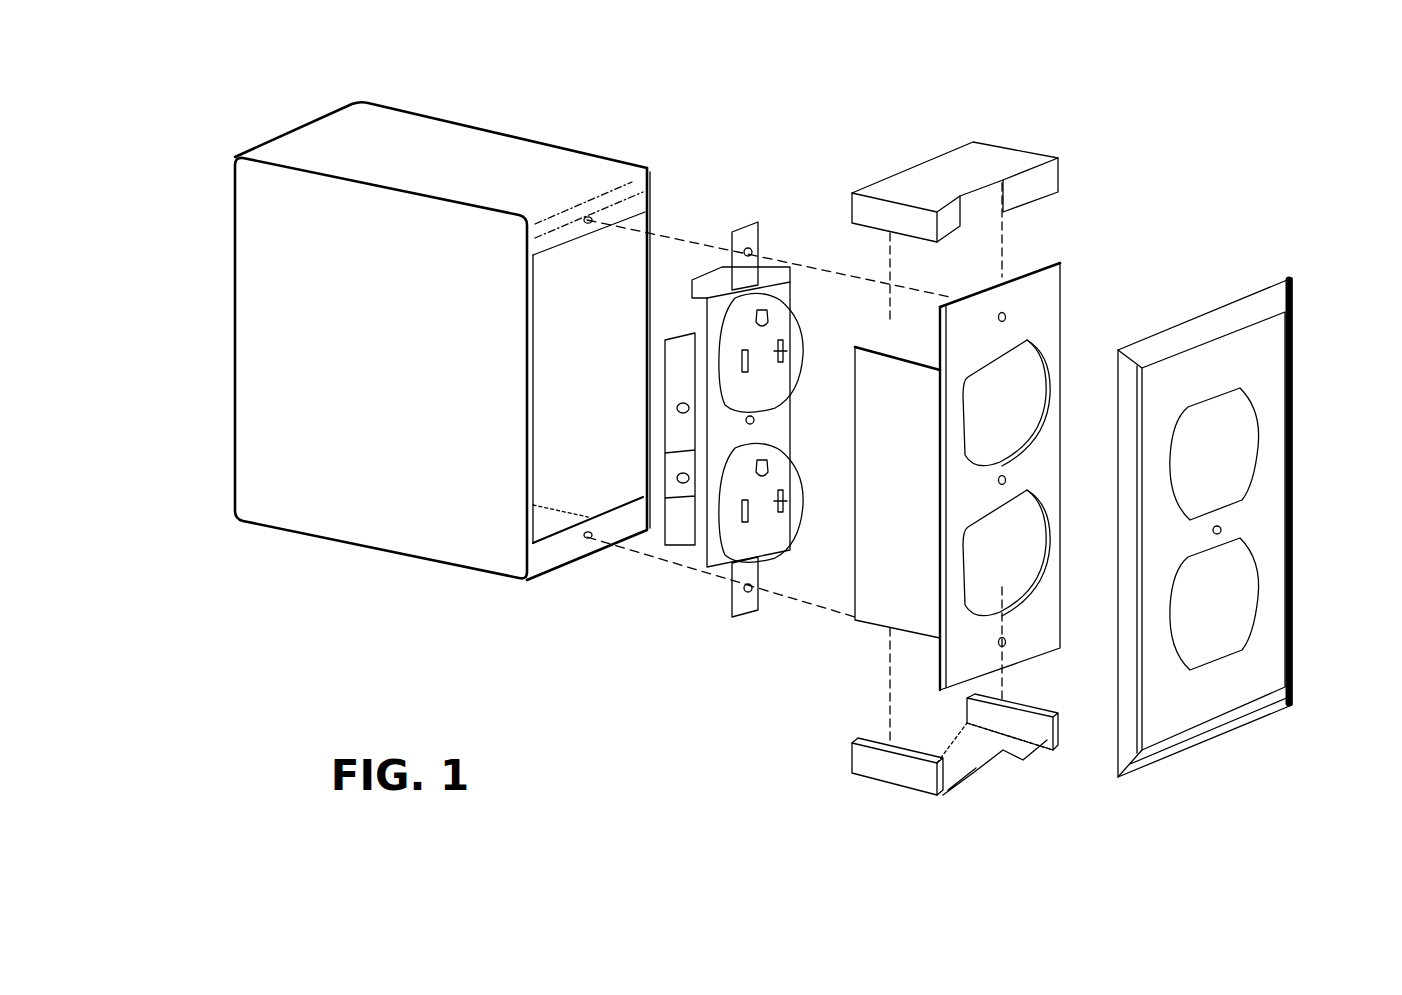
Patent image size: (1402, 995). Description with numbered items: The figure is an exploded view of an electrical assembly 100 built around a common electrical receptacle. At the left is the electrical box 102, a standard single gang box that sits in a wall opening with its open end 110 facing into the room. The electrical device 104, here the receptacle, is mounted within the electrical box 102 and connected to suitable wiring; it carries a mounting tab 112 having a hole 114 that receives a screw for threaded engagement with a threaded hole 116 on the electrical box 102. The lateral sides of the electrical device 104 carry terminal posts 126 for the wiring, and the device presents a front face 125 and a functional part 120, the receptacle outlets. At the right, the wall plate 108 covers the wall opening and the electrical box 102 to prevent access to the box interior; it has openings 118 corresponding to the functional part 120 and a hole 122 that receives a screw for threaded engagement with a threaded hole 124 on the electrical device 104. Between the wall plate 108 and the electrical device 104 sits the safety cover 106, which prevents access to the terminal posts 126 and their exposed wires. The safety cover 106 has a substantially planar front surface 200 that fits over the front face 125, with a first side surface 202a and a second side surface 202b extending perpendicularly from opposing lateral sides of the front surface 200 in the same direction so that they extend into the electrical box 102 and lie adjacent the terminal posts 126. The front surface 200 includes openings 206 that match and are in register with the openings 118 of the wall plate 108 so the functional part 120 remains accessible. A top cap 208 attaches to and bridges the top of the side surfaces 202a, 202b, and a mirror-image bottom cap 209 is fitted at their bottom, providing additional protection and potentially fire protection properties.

The electrical assembly 100 is at (1132, 132).
The electrical box 102 is at (541, 359).
The electrical device 104 is at (710, 409).
The safety cover 106 is at (1086, 524).
The wall plate 108 is at (1259, 525).
The open end 110 is at (578, 470).
The mounting tab 112 is at (738, 202).
The hole 114 is at (752, 250).
The box mounting hole 116 is at (586, 217).
The opening 118 is at (1239, 602).
The functional part 120 is at (752, 533).
The hole 122 is at (1222, 528).
The threaded hole 124 is at (751, 424).
The front face 125 is at (722, 440).
The terminal posts 126 is at (679, 403).
The front surface 200 is at (1010, 451).
The first side surface 202a is at (904, 577).
The second side surface 202b is at (1018, 402).
The opening 206 is at (987, 595).
The top cap 208 is at (950, 160).
The lower end bracket 209 is at (968, 738).